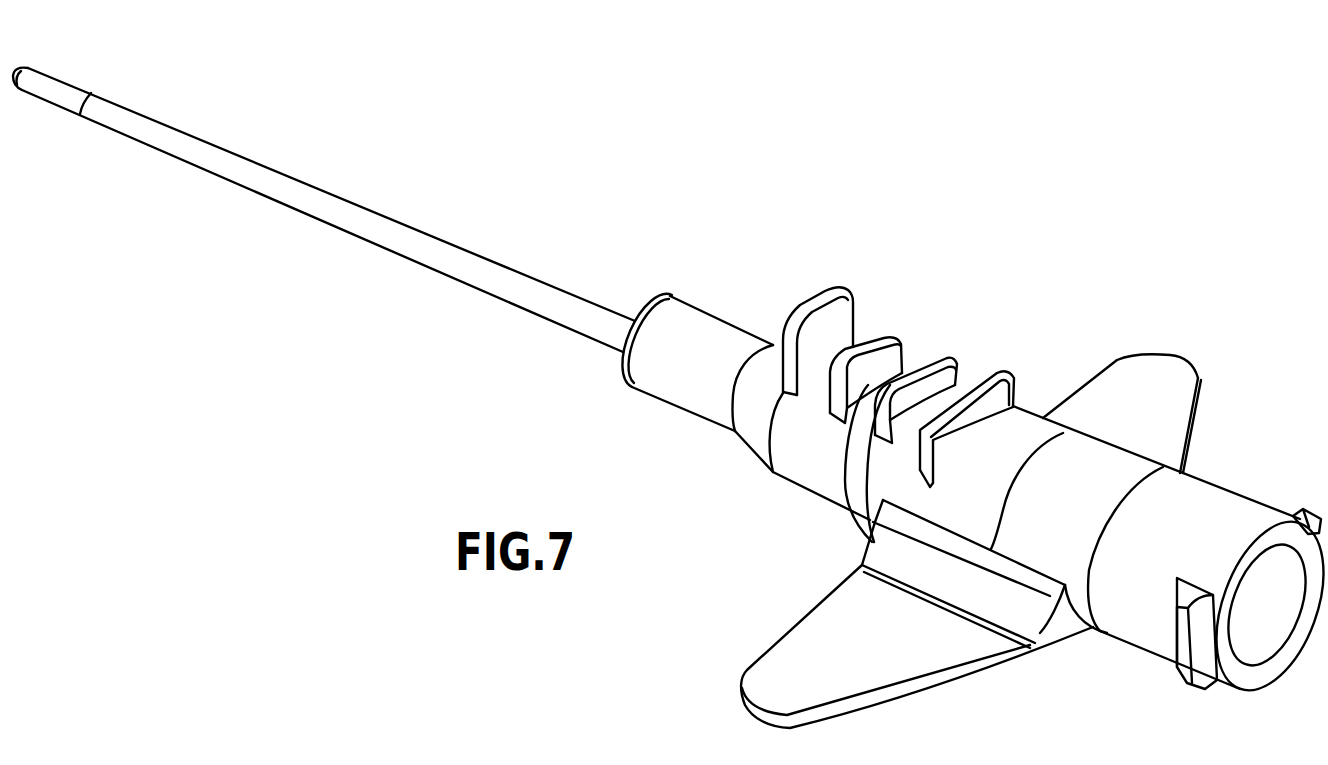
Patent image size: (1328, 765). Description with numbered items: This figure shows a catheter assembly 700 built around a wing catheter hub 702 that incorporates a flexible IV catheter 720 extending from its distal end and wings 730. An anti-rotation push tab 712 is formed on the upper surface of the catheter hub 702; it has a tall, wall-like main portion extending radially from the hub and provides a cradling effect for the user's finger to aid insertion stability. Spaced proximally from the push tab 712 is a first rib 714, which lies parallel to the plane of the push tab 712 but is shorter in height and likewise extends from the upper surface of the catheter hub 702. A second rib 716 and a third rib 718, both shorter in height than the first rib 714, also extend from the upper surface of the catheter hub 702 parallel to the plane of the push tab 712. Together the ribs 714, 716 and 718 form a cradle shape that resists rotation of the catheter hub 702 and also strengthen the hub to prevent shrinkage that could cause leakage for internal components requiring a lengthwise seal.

The catheter assembly 700 is at (1053, 301).
The catheter hub 702 is at (678, 373).
The push tab 712 is at (828, 293).
The first rib 714 is at (882, 348).
The second rib 716 is at (935, 367).
The third rib 718 is at (995, 384).
The flexible IV catheter 720 is at (320, 203).
The wings 730 is at (1157, 377).